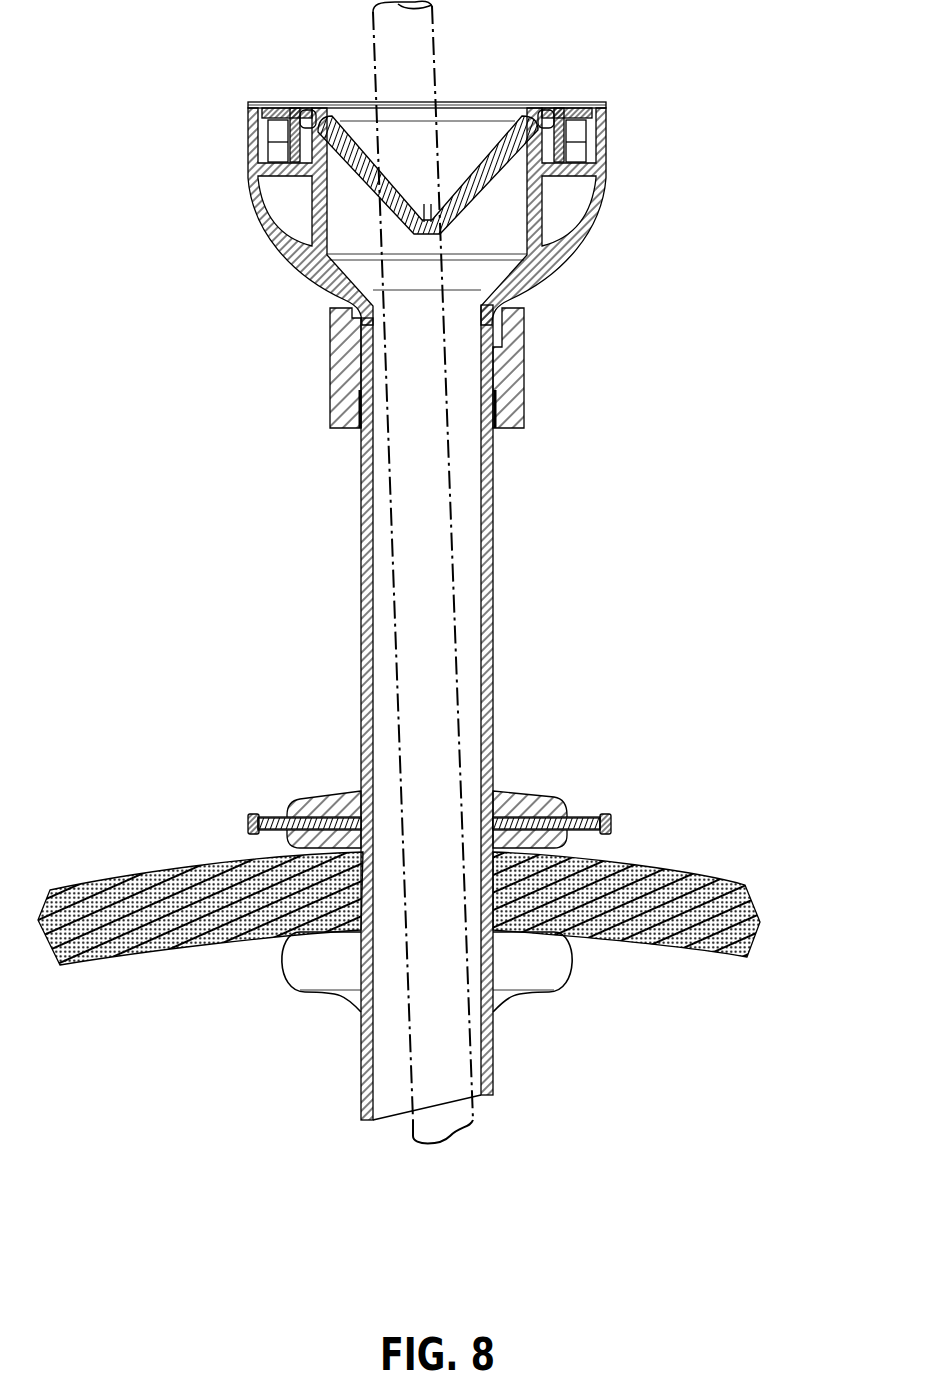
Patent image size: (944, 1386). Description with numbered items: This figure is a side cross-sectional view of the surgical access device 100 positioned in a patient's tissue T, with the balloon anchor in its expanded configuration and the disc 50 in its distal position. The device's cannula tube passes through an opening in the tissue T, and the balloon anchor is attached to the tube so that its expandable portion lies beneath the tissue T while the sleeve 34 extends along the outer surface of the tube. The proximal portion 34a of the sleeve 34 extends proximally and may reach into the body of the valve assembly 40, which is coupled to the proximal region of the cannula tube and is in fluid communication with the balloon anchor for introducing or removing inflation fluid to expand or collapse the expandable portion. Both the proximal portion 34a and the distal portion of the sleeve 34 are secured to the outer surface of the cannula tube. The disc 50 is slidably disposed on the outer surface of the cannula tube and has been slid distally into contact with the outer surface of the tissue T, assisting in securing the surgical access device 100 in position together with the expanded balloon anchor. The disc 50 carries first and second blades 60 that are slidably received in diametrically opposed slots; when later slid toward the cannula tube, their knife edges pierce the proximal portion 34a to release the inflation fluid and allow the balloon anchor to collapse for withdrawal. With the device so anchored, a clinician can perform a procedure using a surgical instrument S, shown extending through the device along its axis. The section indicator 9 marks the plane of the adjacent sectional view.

The surgical instrument S is at (420, 58).
The surgical access device 100 is at (292, 370).
The sleeve 34 is at (497, 735).
The proximal portion of the sleeve 34a is at (358, 430).
The valve assembly 40 is at (544, 358).
The disc 50 is at (526, 787).
The blades 60 is at (268, 806).
The tissue T is at (115, 890).
The section line for FIG. 9 is at (240, 825).